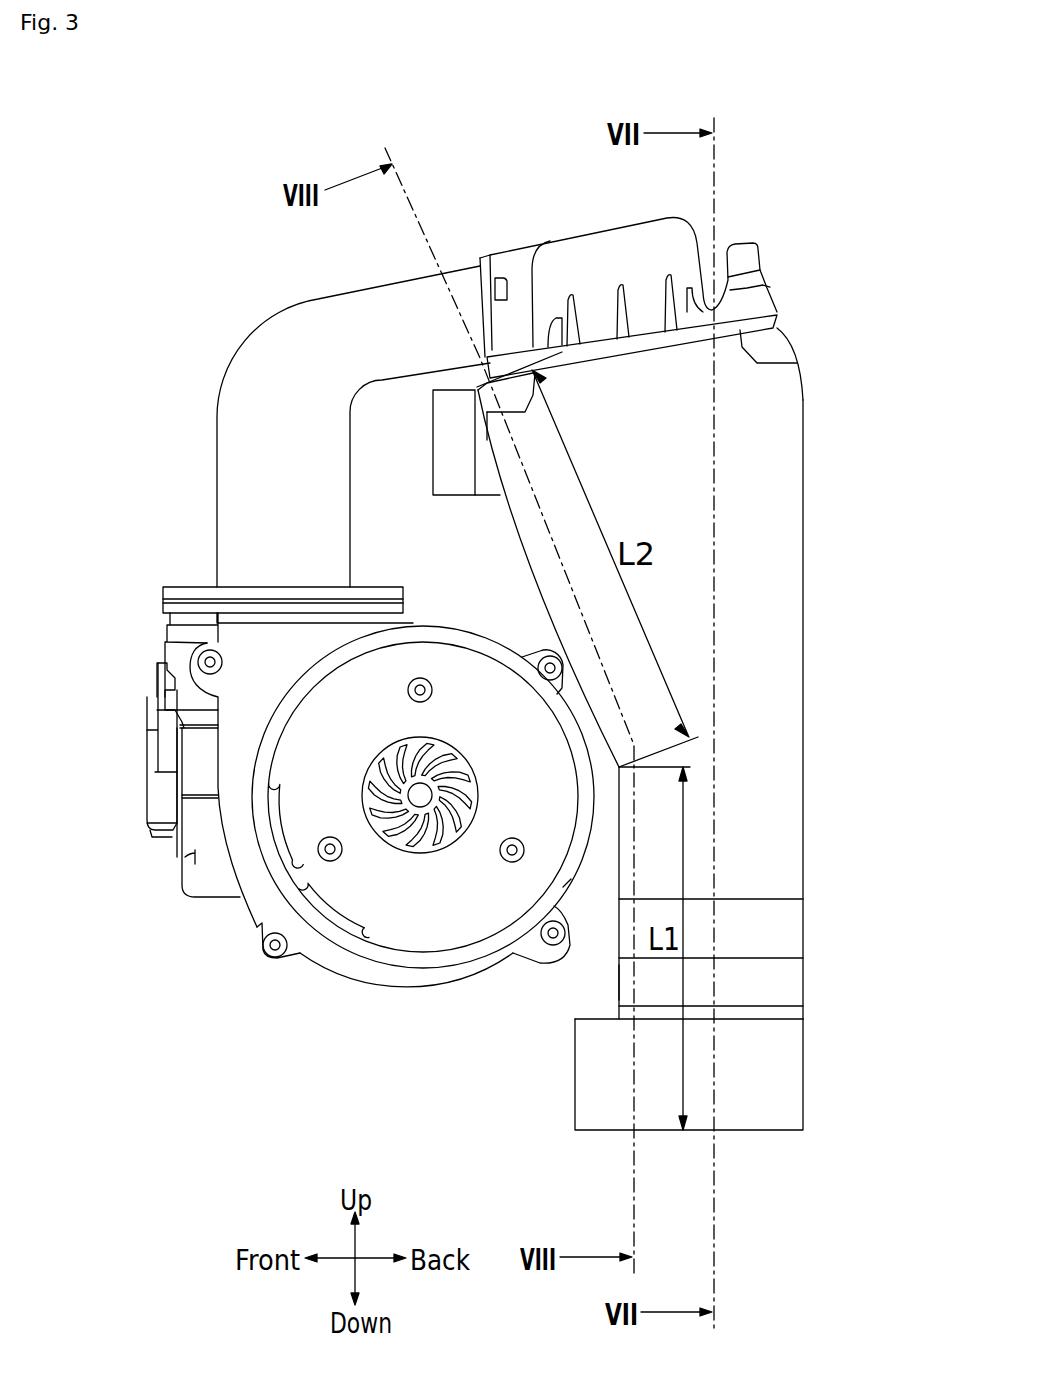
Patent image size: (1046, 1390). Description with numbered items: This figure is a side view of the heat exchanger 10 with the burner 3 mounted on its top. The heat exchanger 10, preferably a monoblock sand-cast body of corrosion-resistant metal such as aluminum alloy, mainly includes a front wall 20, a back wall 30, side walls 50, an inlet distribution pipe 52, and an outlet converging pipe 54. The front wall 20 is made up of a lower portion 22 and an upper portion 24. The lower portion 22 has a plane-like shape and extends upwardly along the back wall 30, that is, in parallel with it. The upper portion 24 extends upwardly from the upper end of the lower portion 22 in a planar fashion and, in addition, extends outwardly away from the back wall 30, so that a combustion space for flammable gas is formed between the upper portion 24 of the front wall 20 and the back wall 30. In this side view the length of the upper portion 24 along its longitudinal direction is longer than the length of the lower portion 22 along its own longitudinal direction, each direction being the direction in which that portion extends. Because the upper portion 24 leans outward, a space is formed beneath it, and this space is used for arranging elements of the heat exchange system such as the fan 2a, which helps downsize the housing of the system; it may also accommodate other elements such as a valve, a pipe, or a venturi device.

The fan 2a is at (400, 988).
The burner 3 is at (575, 232).
The heat exchanger 10 is at (828, 330).
The front wall 20 is at (608, 1000).
The lower portion 22 is at (618, 965).
The upper portion 24 is at (528, 567).
The back wall 30 is at (809, 766).
The side walls 50 is at (793, 951).
The inlet distribution pipe 52 is at (603, 1138).
The outlet converging pipe 54 is at (458, 500).